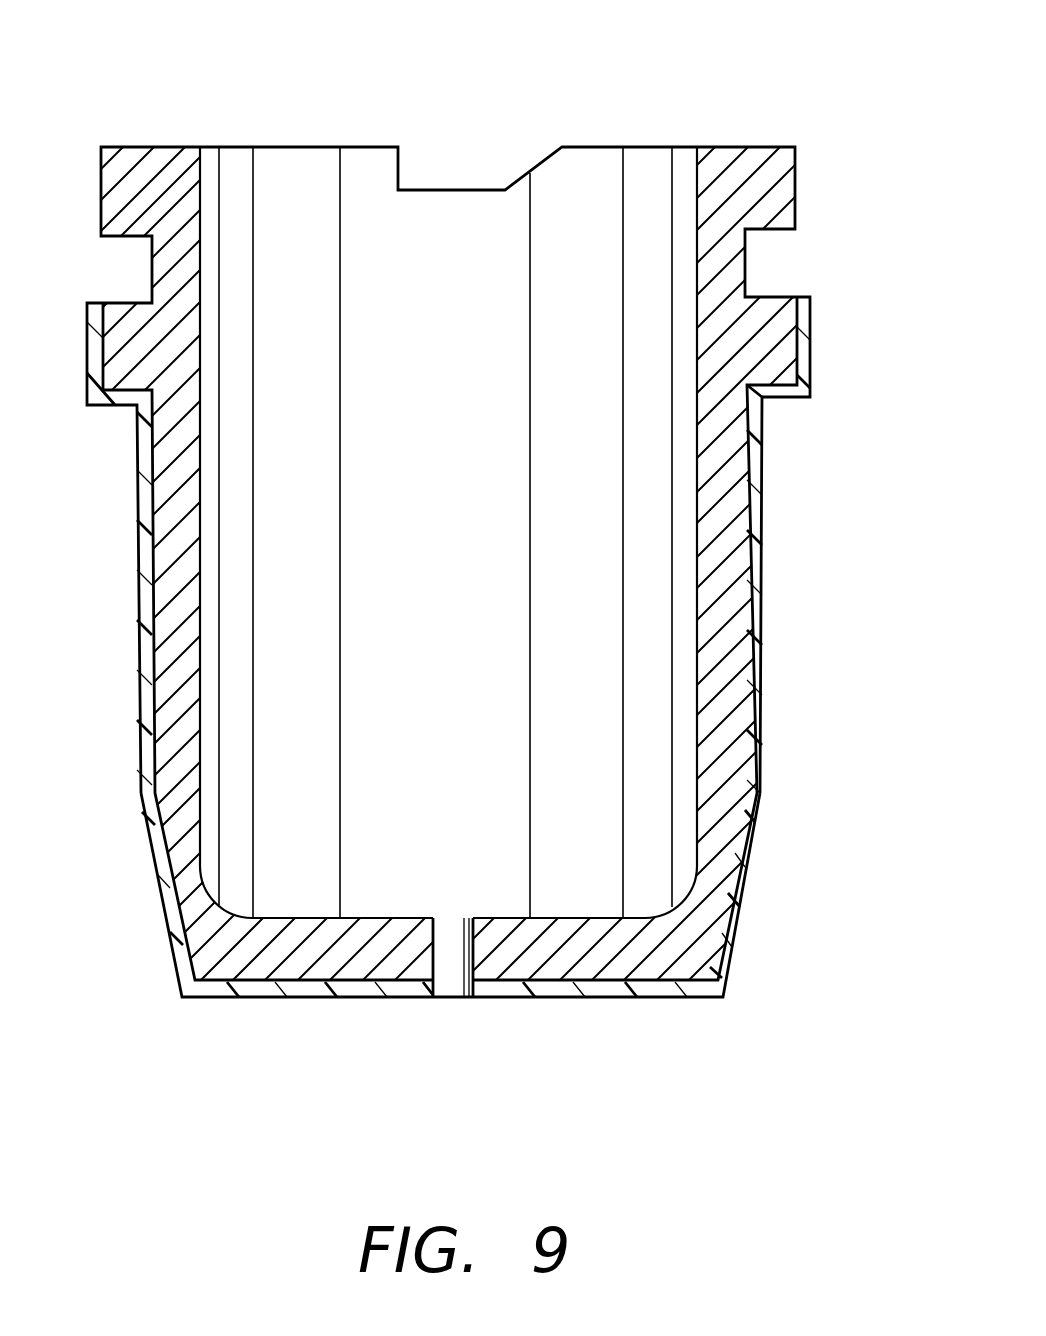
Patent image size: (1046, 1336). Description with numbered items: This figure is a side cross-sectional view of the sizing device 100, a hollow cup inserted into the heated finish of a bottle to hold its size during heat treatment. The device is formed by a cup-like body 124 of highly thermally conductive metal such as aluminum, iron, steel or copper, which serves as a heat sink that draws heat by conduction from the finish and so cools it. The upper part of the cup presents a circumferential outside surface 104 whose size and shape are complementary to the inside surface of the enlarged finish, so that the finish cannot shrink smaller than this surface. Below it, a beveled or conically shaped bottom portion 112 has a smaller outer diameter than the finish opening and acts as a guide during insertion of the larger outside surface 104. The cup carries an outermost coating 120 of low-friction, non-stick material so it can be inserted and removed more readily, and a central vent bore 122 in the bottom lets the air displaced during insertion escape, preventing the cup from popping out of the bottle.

The sizing device 100 is at (230, 95).
The outside surface 104 is at (763, 465).
The outermost coating 120 is at (763, 552).
The cup-like body 124 is at (735, 700).
The bottom portion 112 is at (747, 883).
The central vent bore 122 is at (455, 998).